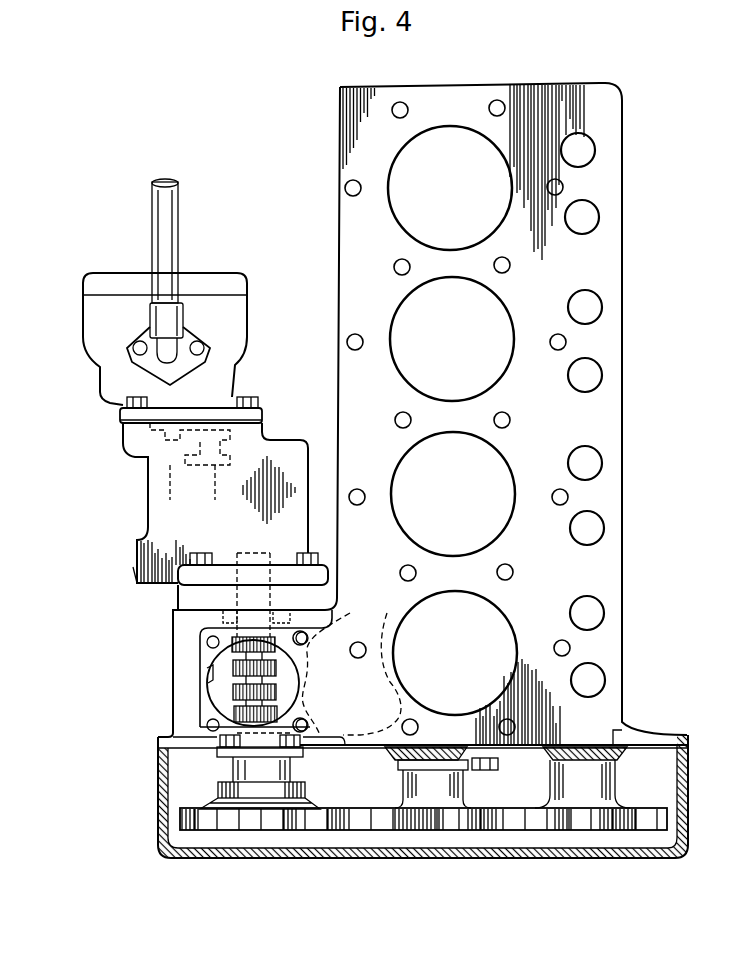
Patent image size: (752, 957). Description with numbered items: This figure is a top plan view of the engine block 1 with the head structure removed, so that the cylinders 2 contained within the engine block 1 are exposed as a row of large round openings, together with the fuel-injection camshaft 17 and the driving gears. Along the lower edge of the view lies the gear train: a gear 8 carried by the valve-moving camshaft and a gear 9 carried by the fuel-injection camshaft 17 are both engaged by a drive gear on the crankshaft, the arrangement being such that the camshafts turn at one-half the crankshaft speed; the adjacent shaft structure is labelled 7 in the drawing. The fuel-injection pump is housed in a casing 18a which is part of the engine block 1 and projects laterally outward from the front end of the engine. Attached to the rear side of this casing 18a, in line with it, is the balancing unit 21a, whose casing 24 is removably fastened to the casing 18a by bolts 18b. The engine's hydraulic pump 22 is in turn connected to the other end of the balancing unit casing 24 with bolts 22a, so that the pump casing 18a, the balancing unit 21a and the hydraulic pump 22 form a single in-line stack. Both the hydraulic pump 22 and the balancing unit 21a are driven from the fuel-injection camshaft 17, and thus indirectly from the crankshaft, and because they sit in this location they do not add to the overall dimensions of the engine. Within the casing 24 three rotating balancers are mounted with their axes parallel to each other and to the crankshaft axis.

The engine block 1 is at (622, 270).
The cylinder 2 is at (503, 375).
The balancer shaft 7 is at (437, 822).
The gear 8 is at (590, 818).
The gear 9 is at (265, 832).
The fuel-injection camshaft 17 is at (233, 683).
The fuel-injection pump casing 18a is at (173, 650).
The bolts 18b is at (203, 553).
The balancing unit 21a is at (131, 566).
The hydraulic pump 22 is at (98, 342).
The bolts 22a is at (247, 395).
The casing 24 is at (148, 503).